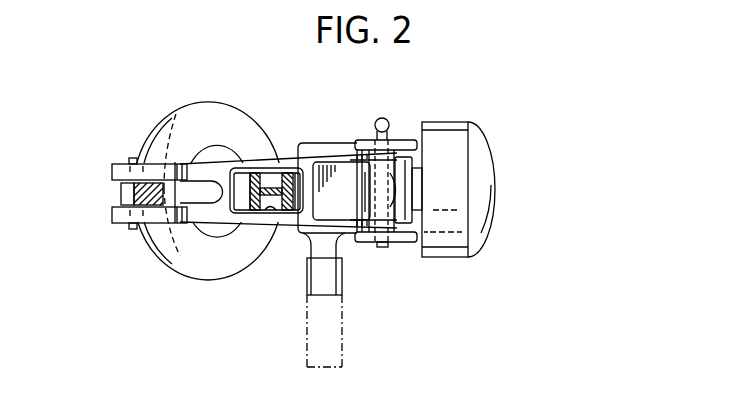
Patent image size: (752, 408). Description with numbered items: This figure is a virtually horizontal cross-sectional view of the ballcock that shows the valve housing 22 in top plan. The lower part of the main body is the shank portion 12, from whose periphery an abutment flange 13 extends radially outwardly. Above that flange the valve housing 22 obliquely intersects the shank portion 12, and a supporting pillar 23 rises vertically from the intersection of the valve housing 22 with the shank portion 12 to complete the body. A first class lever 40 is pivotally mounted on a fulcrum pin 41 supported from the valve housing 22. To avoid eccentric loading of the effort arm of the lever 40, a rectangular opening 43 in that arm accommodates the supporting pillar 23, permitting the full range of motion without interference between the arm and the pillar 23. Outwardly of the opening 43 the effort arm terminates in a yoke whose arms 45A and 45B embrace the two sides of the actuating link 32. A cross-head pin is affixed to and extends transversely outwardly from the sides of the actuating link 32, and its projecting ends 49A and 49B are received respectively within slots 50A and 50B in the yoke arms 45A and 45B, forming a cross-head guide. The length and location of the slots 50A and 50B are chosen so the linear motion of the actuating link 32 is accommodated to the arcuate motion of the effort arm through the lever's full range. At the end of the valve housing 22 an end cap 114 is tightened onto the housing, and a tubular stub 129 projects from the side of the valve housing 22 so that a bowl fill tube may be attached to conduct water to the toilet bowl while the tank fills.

The shank portion 12 is at (226, 144).
The abutment flange 13 is at (158, 119).
The valve housing 22 is at (410, 248).
The supporting pillar 23 is at (279, 188).
The actuating link 32 is at (110, 195).
The first class lever 40 is at (318, 154).
The fulcrum pin 41 is at (382, 248).
The rectangular opening 43 is at (268, 212).
The yoke arm 45A is at (112, 172).
The yoke arm 45B is at (112, 210).
The projecting end of pin 49A is at (133, 158).
The projecting end of pin 49B is at (133, 229).
The slot 50A is at (168, 121).
The slot 50B is at (170, 250).
The end cap 114 is at (459, 118).
The tubular stub 129 is at (333, 284).